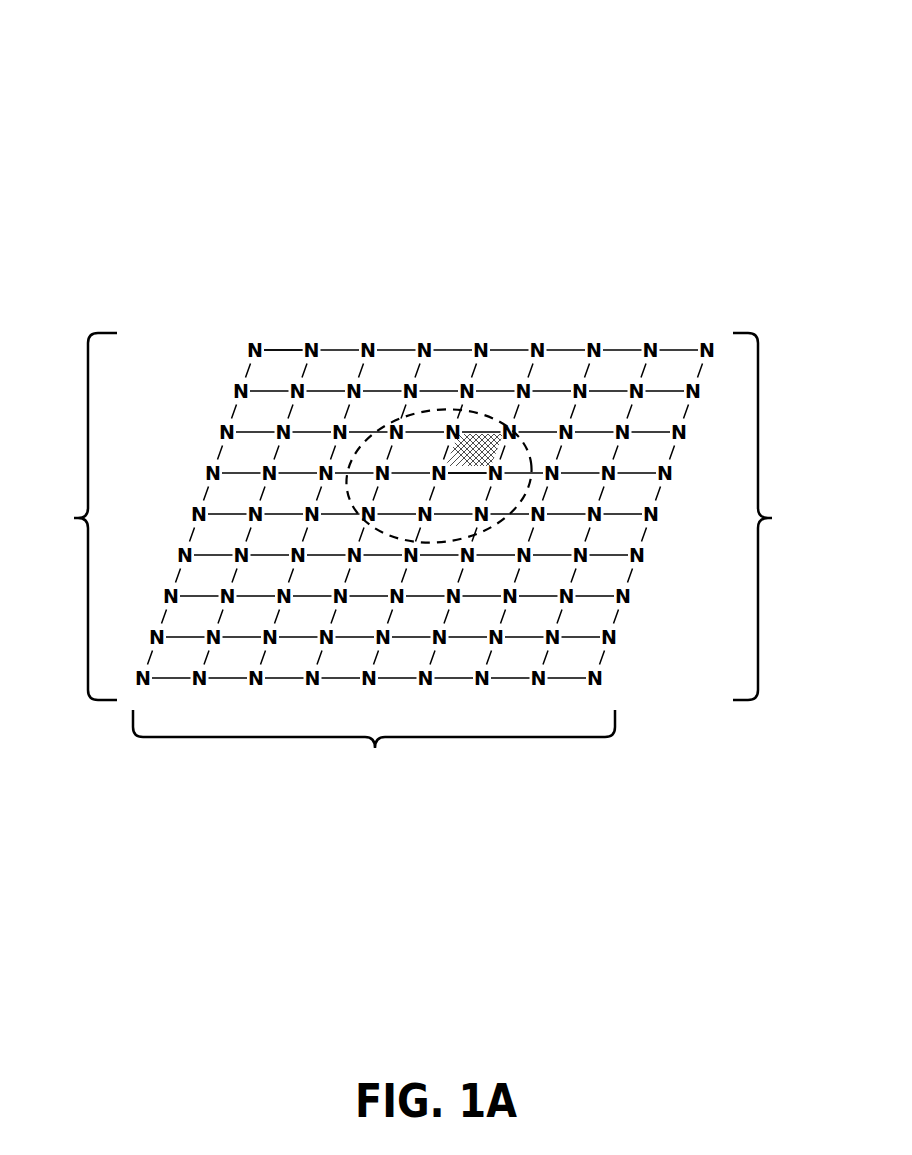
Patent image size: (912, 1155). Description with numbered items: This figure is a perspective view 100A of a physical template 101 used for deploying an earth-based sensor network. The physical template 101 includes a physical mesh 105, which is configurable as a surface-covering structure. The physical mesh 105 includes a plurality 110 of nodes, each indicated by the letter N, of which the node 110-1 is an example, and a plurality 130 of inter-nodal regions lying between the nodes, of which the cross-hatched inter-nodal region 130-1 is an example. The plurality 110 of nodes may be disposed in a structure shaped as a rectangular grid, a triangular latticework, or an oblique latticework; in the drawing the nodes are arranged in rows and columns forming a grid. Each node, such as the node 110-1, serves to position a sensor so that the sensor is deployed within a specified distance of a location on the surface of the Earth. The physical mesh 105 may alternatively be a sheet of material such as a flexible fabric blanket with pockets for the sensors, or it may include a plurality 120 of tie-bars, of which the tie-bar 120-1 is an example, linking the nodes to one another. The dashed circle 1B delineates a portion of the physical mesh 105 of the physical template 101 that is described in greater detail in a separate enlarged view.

The perspective view 100A is at (121, 66).
The physical template 101 is at (697, 257).
The physical mesh 105 is at (289, 340).
The plurality of nodes 110 is at (75, 516).
The node 110-1 is at (436, 448).
The plurality of tie-bars 120 is at (374, 746).
The tie-bar 120-1 is at (470, 473).
The plurality of inter-nodal regions 130 is at (777, 516).
The inter-nodal region 130-1 is at (487, 450).
The circle 1B is at (497, 410).